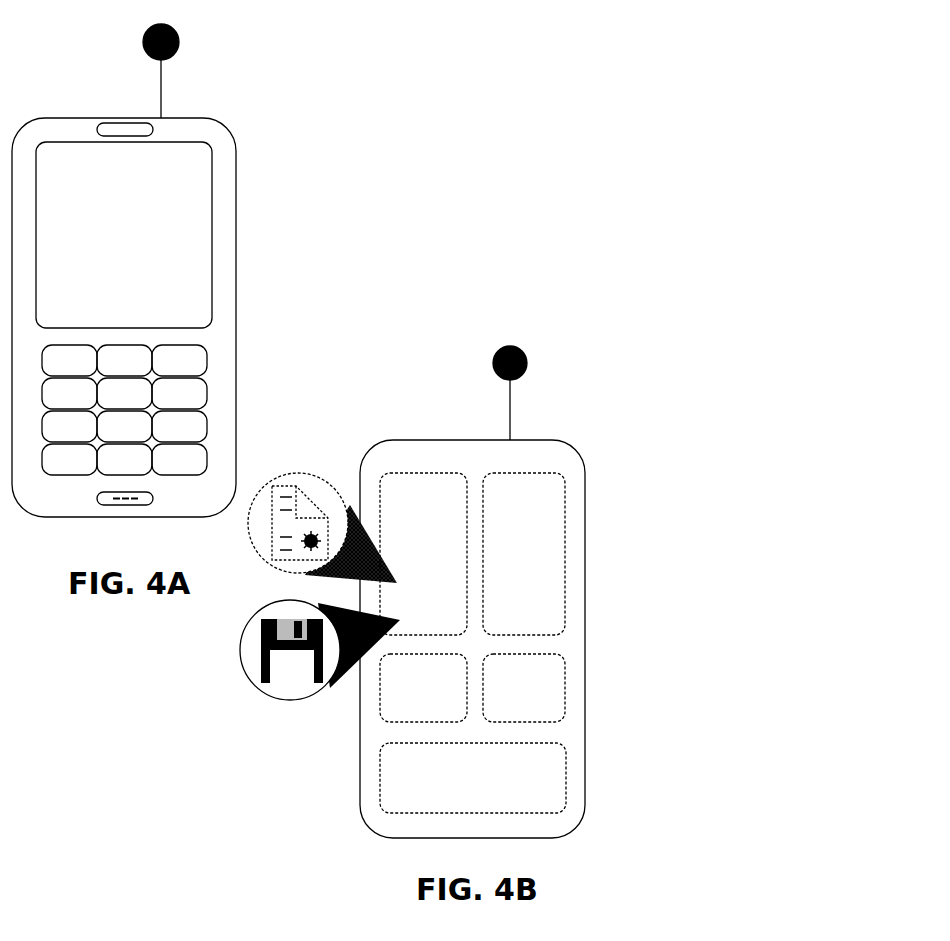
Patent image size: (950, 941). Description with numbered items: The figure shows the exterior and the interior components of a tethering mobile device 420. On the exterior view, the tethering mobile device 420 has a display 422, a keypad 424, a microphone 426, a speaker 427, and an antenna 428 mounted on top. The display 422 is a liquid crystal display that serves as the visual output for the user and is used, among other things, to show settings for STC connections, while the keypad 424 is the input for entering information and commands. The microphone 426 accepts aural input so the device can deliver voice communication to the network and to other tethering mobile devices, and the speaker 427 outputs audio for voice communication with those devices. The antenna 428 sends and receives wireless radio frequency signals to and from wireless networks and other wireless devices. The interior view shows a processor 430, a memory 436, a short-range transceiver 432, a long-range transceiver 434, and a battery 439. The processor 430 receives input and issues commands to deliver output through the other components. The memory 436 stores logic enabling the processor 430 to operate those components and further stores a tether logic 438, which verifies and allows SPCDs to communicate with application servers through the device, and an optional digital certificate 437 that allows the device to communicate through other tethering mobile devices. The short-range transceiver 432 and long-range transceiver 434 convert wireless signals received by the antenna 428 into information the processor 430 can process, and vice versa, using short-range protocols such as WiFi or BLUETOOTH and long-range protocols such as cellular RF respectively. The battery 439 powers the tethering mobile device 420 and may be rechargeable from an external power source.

In FIG. 4A, the tethering mobile device 420 is at (111, 117).
In FIG. 4B, the tethering mobile device 420 is at (535, 440).
In FIG. 4A, the display 422 is at (212, 210).
In FIG. 4A, the keypad 424 is at (206, 395).
In FIG. 4A, the microphone 426 is at (110, 503).
In FIG. 4A, the speaker 427 is at (125, 136).
In FIG. 4A, the antenna 428 is at (173, 57).
In FIG. 4B, the antenna 428 is at (519, 346).
In FIG. 4B, the processor 430 is at (565, 546).
In FIG. 4B, the short-range transceiver 432 is at (565, 683).
In FIG. 4B, the long-range transceiver 434 is at (383, 705).
In FIG. 4B, the memory 436 is at (398, 473).
In FIG. 4B, the digital certificate 437 is at (272, 547).
In FIG. 4B, the tether logic 438 is at (262, 670).
In FIG. 4B, the battery 439 is at (566, 783).